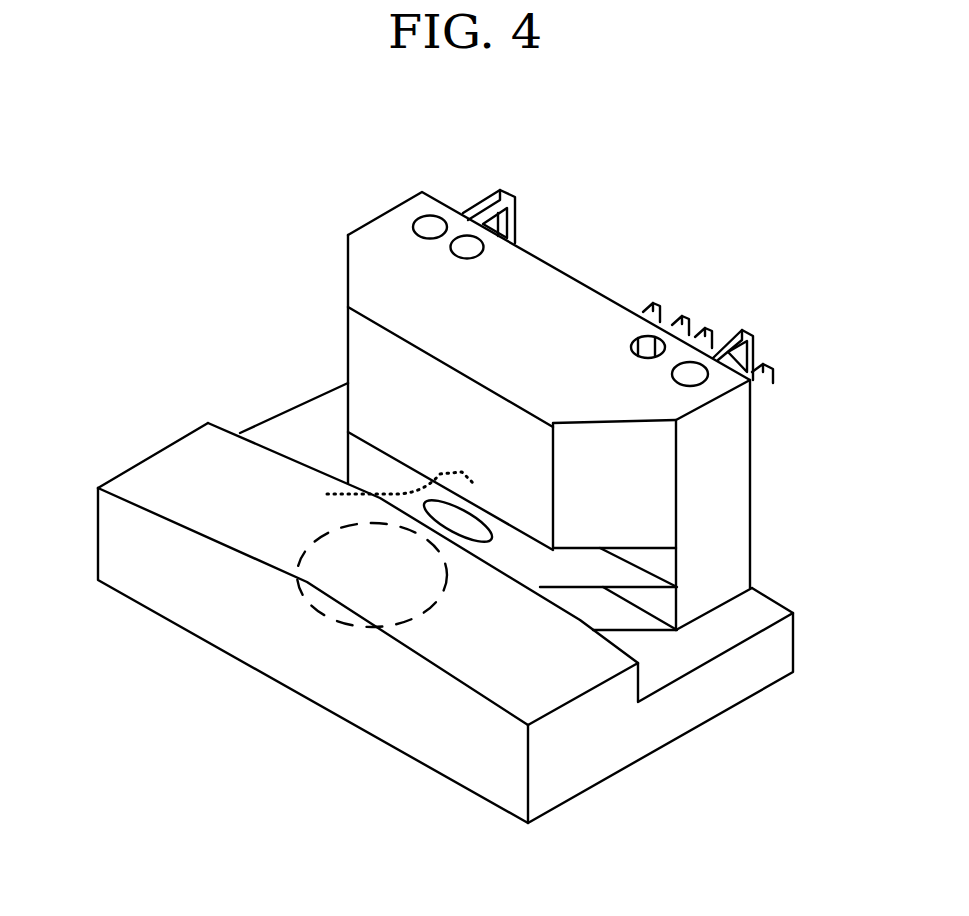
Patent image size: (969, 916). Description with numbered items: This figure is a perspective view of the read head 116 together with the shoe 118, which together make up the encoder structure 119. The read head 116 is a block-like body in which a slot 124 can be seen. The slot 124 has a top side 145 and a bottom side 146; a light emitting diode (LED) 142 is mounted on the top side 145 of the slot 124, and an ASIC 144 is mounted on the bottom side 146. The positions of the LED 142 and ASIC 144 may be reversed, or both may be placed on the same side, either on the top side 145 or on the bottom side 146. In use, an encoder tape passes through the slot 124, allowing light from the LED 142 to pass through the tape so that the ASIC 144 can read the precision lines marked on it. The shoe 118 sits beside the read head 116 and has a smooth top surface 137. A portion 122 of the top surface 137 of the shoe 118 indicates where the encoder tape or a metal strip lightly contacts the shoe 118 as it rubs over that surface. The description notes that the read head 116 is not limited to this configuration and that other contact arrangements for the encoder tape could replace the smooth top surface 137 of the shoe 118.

The read head 116 is at (752, 498).
The shoe 118 is at (243, 660).
The encoder structure 119 is at (303, 333).
The portion of the top surface 122 is at (367, 567).
The slot 124 is at (578, 568).
The top surface 137 is at (245, 505).
The light emitting diode (LED) 142 is at (374, 490).
The ASIC 144 is at (460, 535).
The top side 145 is at (376, 456).
The bottom side 146 is at (531, 565).